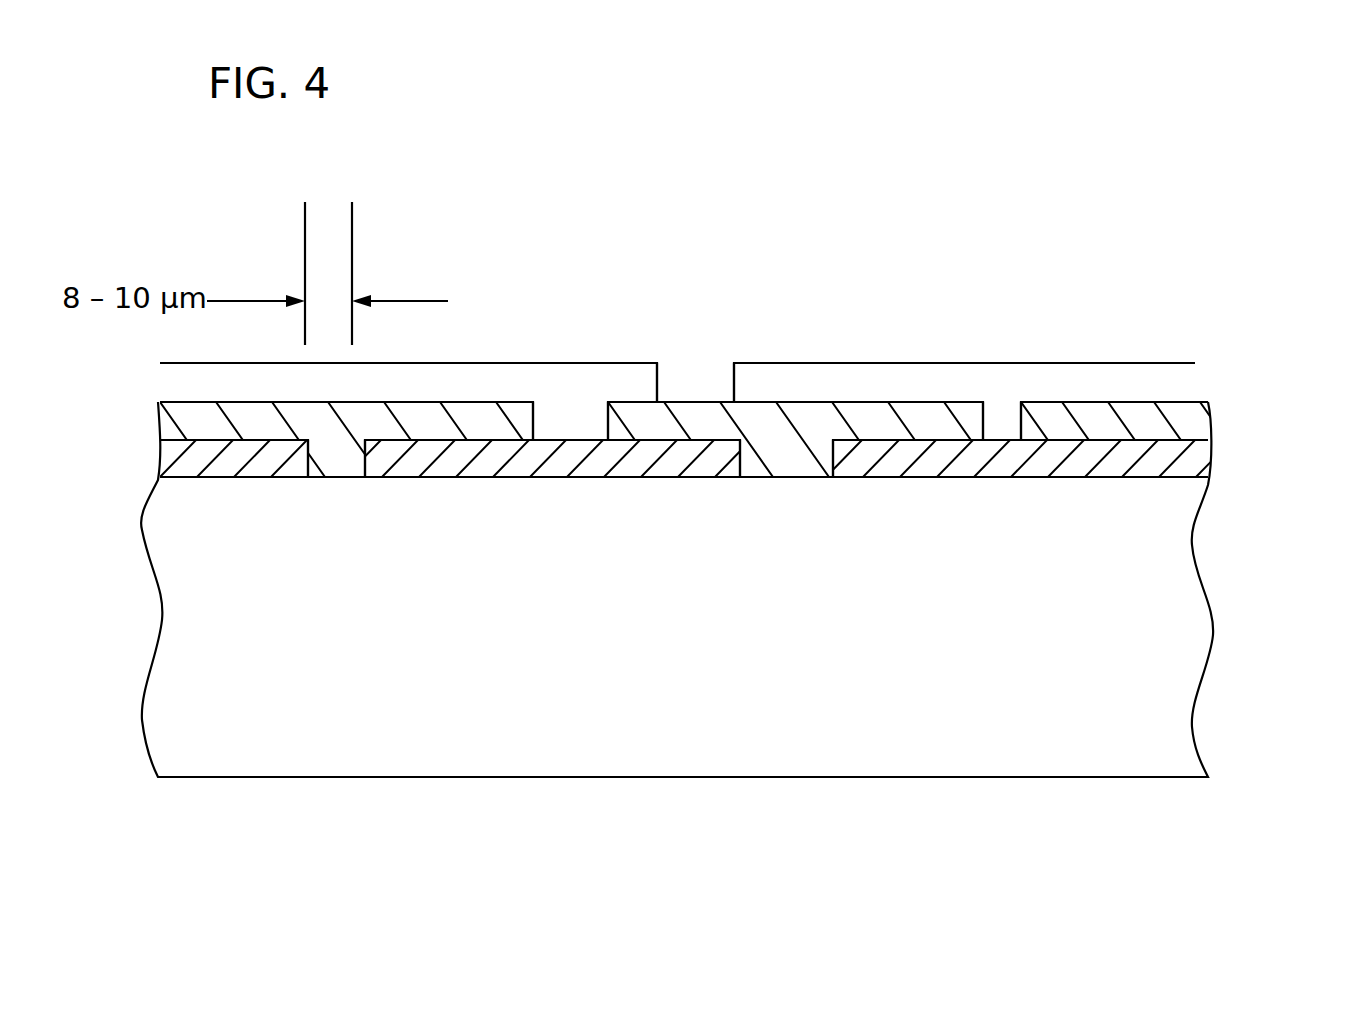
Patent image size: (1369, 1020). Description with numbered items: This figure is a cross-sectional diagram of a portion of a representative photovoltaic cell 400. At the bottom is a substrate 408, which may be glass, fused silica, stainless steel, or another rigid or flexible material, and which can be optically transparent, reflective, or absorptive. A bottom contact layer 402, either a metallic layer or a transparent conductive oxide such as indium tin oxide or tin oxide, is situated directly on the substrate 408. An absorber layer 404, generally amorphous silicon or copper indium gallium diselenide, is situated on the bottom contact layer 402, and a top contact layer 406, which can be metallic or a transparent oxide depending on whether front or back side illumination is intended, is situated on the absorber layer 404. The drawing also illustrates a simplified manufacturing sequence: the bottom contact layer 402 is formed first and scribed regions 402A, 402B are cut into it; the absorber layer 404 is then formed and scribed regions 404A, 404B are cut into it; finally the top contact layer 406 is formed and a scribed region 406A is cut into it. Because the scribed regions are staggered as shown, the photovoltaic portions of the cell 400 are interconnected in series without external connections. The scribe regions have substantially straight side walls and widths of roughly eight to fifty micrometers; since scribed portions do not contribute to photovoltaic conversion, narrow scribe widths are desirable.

The photovoltaic cell 400 is at (982, 147).
The bottom contact layer 402 is at (1218, 470).
The scribed region 402A is at (340, 487).
The scribed region 402B is at (795, 487).
The absorber layer 404 is at (1218, 422).
The scribed region 404A is at (572, 410).
The scribed region 404B is at (1000, 417).
The top contact layer 406 is at (1178, 388).
The scribed region 406A is at (683, 390).
The substrate 408 is at (1150, 537).